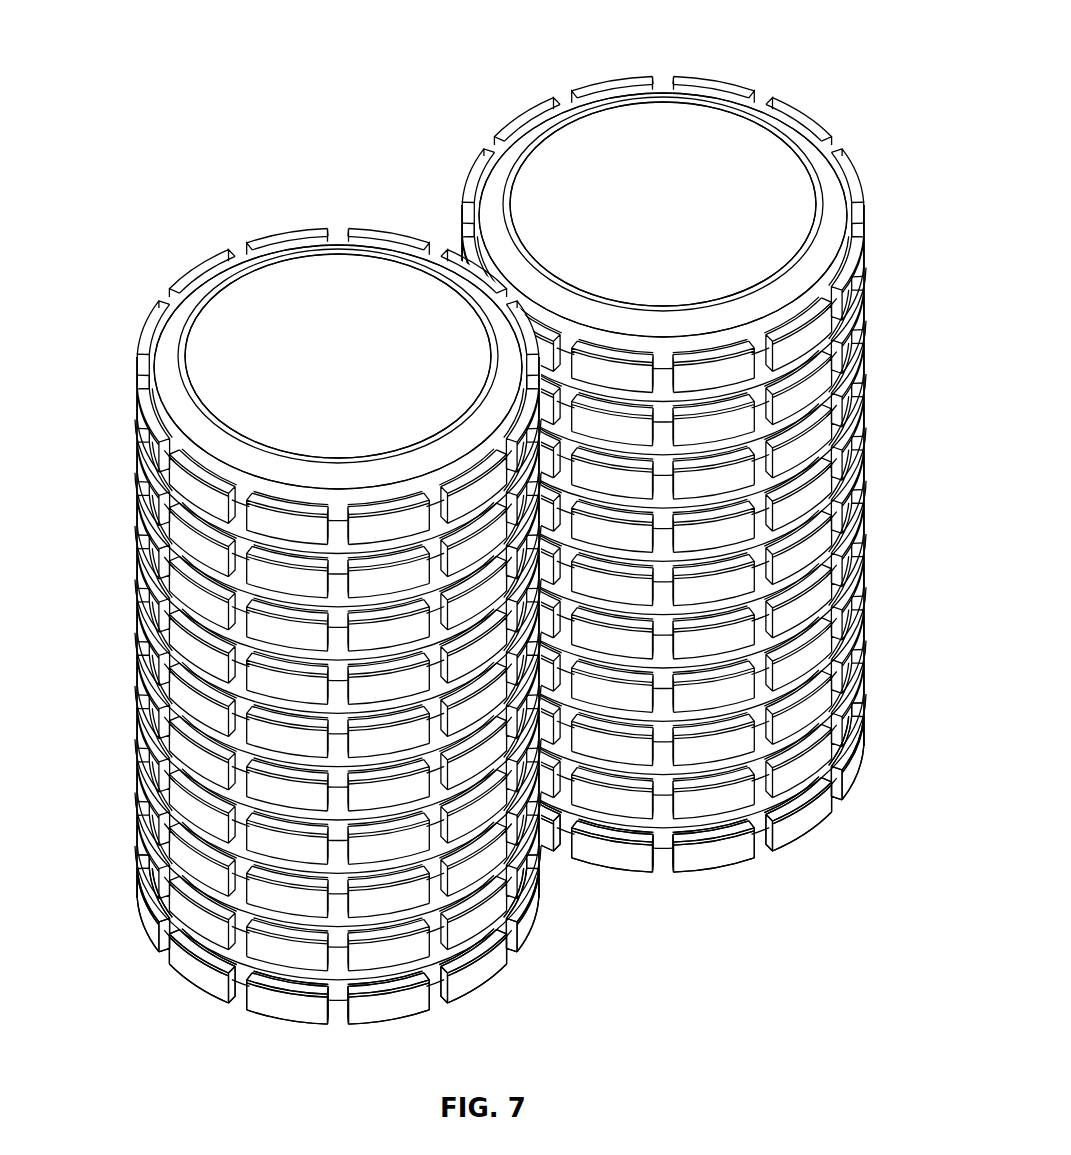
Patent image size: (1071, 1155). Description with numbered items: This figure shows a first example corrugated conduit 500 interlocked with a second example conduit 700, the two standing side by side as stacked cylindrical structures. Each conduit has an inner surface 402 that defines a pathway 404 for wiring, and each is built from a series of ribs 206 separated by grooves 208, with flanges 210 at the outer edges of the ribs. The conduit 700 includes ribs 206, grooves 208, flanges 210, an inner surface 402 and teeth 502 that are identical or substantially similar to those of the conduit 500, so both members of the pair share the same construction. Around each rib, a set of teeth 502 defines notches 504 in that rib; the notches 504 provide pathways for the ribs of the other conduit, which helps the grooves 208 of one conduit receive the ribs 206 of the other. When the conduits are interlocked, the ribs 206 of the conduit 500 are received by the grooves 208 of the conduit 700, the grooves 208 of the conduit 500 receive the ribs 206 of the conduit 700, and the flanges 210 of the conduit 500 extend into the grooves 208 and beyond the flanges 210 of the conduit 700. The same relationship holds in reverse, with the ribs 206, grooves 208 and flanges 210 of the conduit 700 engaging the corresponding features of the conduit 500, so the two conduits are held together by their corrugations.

The ribs 206 is at (838, 232).
The grooves 208 is at (501, 642).
The flanges 210 is at (870, 368).
The inner surface 402 is at (553, 175).
The pathway 404 is at (643, 140).
The conduit 500 is at (218, 268).
The teeth 502 is at (803, 818).
The notches 504 is at (763, 865).
The conduit 700 is at (715, 92).